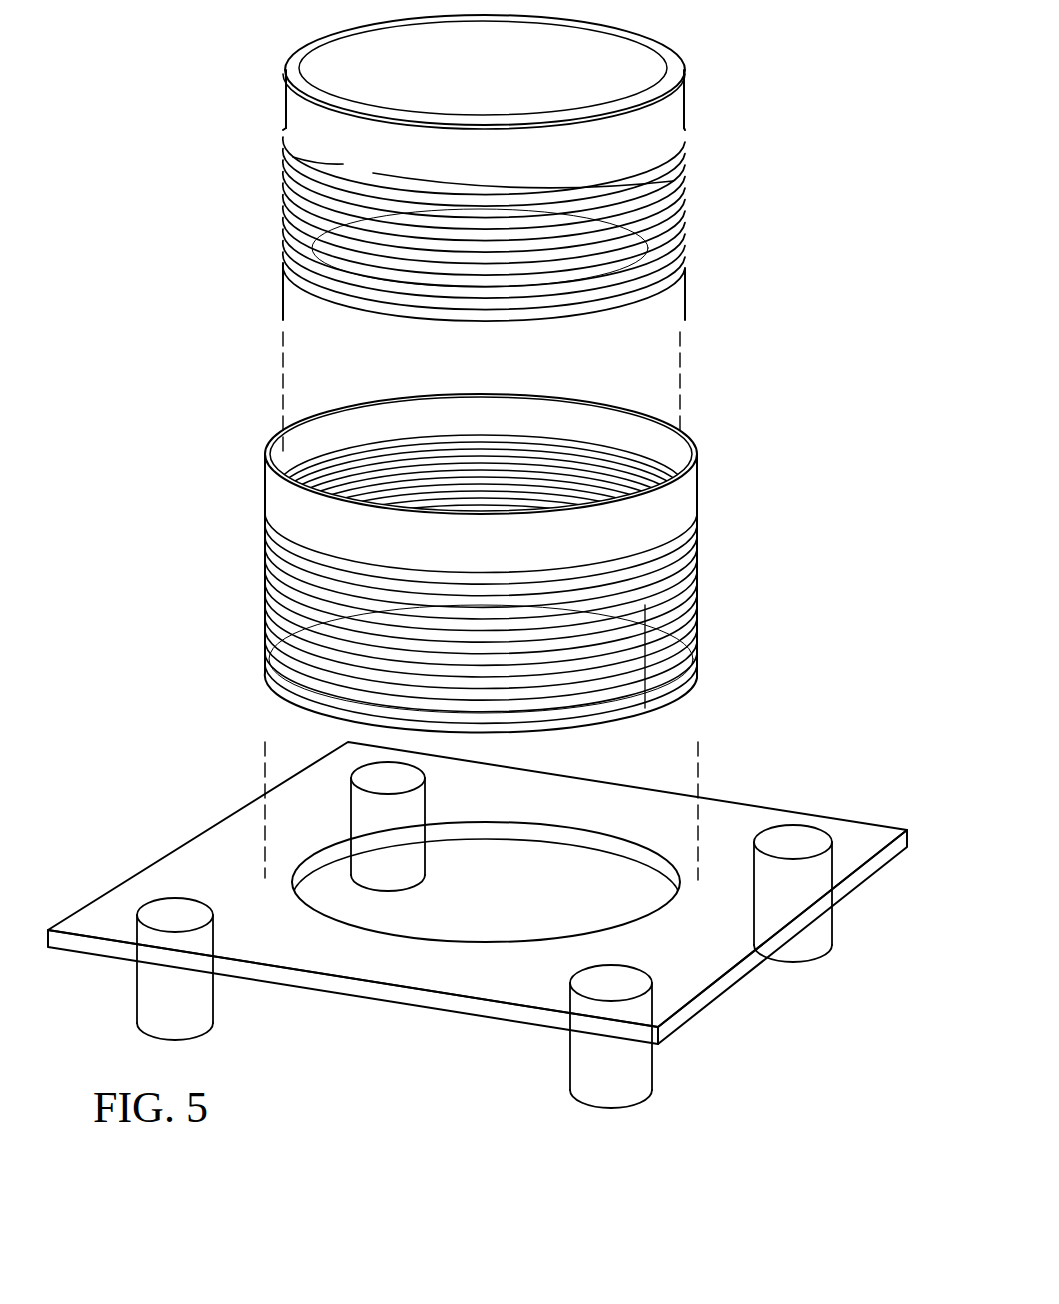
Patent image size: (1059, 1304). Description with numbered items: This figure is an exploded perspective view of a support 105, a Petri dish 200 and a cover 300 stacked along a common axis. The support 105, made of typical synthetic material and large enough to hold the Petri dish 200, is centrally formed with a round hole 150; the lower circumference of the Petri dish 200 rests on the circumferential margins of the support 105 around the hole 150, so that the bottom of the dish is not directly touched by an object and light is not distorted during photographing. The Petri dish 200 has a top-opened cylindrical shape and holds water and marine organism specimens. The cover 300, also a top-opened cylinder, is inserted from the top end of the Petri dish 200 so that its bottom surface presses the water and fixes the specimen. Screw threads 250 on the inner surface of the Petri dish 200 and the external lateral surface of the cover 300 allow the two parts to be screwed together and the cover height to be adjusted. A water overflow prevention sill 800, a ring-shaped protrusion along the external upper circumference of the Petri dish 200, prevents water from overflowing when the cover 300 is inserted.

The cover 300 is at (670, 107).
The threads 250 is at (523, 467).
The water overflow prevention sill 800 is at (697, 452).
The Petri dish 200 is at (552, 561).
The support 105 is at (472, 925).
The round hole 150 is at (492, 928).